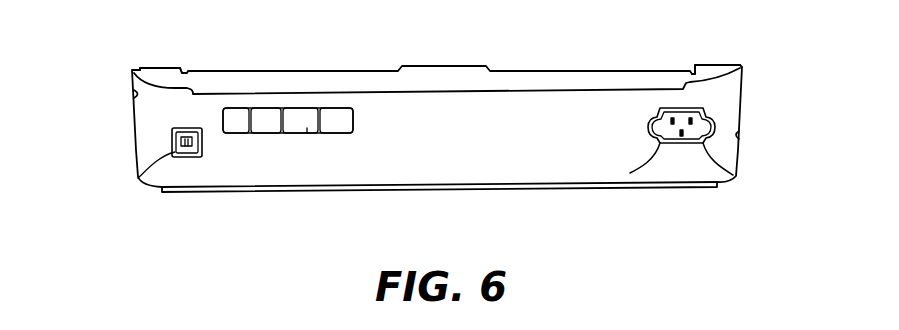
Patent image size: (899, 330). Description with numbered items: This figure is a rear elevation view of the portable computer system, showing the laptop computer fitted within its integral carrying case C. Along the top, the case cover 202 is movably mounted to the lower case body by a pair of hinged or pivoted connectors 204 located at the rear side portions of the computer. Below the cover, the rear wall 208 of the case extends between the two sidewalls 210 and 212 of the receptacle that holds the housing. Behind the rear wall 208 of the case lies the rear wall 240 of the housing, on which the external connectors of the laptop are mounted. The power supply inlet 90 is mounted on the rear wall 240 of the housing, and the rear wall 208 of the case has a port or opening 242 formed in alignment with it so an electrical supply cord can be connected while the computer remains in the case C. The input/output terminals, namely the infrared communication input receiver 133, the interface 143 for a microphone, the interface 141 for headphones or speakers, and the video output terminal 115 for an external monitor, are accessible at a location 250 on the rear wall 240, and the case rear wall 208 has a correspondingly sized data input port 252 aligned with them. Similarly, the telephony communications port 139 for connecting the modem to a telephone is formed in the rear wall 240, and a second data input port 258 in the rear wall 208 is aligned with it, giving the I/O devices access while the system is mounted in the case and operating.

The integral carrying case C is at (140, 42).
The power supply inlet 90 is at (702, 112).
The output terminal 115 is at (342, 133).
The infrared communication input receiver 133 is at (233, 133).
The telephony communications port 139 is at (138, 178).
The interface for stereo speakers 141 is at (307, 133).
The interface for microphone 143 is at (265, 133).
The case cover 202 is at (573, 65).
The hinged or pivoted connectors 204 is at (176, 64).
The rear wall 208 is at (547, 140).
The sidewall 210 is at (741, 135).
The sidewall 212 is at (132, 95).
The rear wall of the housing 240 is at (182, 157).
The port or opening 242 is at (630, 173).
The location 250 is at (282, 133).
The data input port 252 is at (348, 104).
The second data input port 258 is at (168, 143).